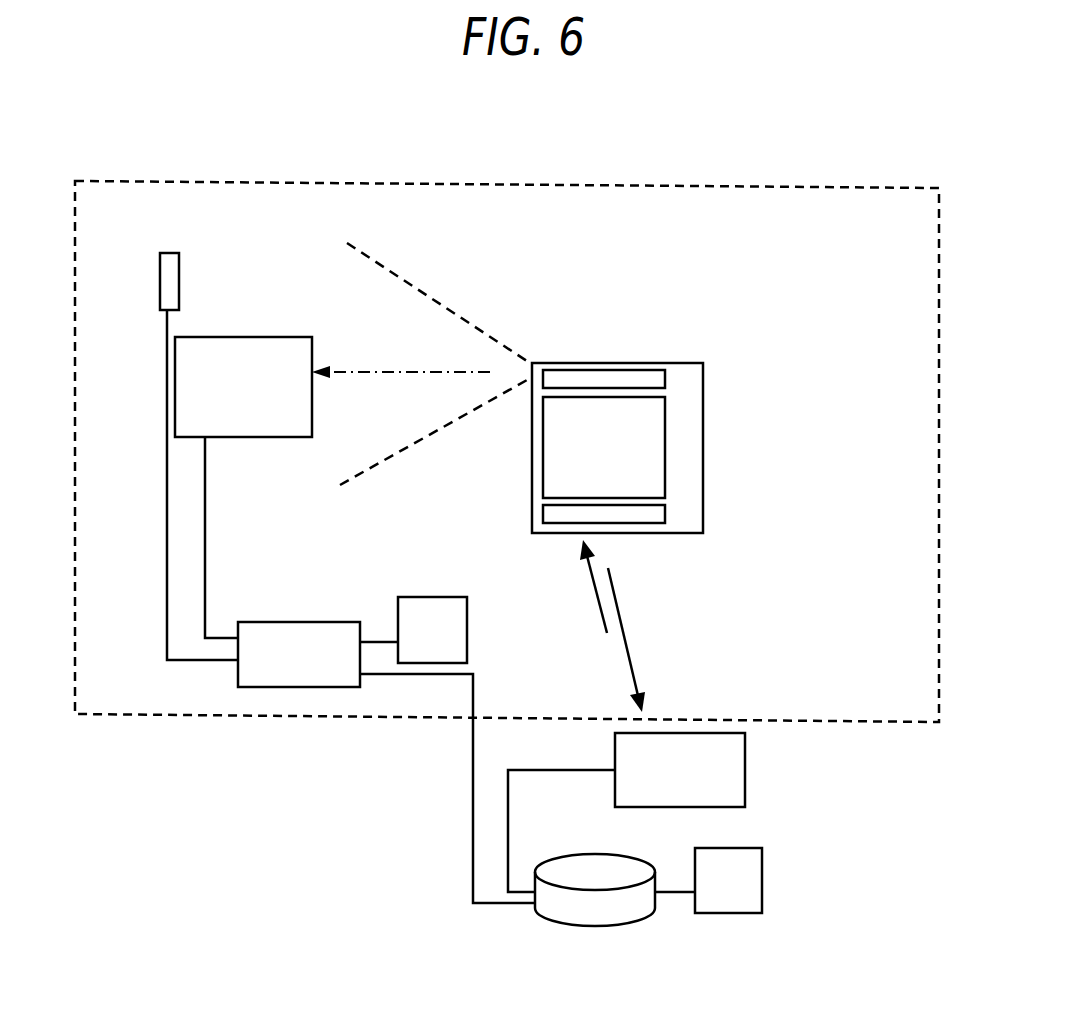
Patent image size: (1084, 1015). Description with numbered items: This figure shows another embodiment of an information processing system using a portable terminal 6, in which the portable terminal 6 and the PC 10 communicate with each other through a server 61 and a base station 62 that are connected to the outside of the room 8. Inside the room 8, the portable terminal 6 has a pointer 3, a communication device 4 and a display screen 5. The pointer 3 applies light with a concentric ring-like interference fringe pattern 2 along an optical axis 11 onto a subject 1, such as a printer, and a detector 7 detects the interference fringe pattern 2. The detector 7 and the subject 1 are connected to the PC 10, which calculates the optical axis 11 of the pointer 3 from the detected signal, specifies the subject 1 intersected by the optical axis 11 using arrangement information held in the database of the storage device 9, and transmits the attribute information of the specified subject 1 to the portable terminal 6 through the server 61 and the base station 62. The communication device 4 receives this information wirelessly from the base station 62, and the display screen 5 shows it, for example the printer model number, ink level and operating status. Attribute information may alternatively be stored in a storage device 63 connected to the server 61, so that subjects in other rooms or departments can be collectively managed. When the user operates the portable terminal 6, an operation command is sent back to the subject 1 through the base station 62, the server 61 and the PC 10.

The subject 1 is at (243, 438).
The interference fringe pattern 2 is at (420, 292).
The pointer 3 is at (610, 378).
The communication device 4 is at (643, 515).
The display screen 5 is at (665, 410).
The portable terminal 6 is at (703, 490).
The detector 7 is at (168, 253).
The room 8 is at (180, 181).
The storage device 9 is at (432, 597).
The PC 10 is at (298, 622).
The optical axis 11 is at (385, 370).
The server 61 is at (595, 926).
The base station 62 is at (745, 770).
The storage device 63 is at (762, 880).